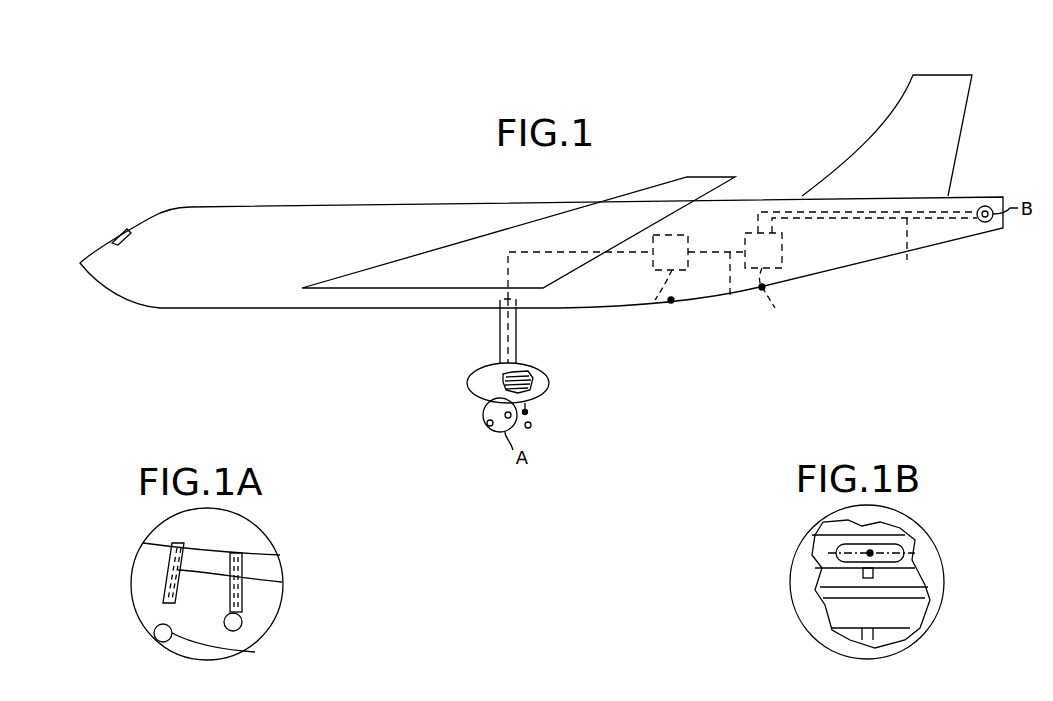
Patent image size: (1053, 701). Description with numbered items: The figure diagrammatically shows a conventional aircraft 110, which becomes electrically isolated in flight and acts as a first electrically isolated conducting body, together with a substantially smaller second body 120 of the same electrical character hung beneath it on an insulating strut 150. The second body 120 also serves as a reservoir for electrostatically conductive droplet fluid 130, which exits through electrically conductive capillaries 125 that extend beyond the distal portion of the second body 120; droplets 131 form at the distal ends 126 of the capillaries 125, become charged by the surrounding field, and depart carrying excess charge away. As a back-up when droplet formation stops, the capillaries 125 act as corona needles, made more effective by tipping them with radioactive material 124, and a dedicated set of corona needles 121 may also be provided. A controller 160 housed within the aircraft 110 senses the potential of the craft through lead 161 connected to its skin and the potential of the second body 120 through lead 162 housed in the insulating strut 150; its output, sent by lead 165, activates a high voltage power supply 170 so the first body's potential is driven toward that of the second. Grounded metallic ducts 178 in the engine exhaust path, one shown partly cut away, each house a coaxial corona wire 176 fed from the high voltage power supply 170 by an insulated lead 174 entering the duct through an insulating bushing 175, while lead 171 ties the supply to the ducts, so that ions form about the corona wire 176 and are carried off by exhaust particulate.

In FIG. 1, the aircraft 110 is at (282, 198).
In FIG. 1, the second body 120 is at (470, 378).
In FIG. 1, the corona needles 121 is at (479, 406).
In FIG. 1A, the radioactive material 124 is at (165, 603).
In FIG. 1, the capillaries 125 is at (528, 412).
In FIG. 1A, the capillaries 125 is at (268, 580).
In FIG. 1A, the distal ends 126 is at (246, 612).
In FIG. 1, the droplet fluid 130 is at (545, 377).
In FIG. 1, the droplets 131 is at (531, 428).
In FIG. 1A, the droplets 131 is at (241, 628).
In FIG. 1, the insulating strut 150 is at (500, 325).
In FIG. 1, the controller 160 is at (699, 263).
In FIG. 1, the lead 161 is at (655, 300).
In FIG. 1, the lead 162 is at (516, 334).
In FIG. 1, the lead 165 is at (725, 288).
In FIG. 1, the high voltage power supply 170 is at (782, 252).
In FIG. 1, the lead 171 is at (777, 297).
In FIG. 1, the insulated lead 174 is at (875, 244).
In FIG. 1B, the insulated lead 174 is at (835, 583).
In FIG. 1B, the insulating bushing 175 is at (855, 575).
In FIG. 1B, the corona wire 176 is at (850, 550).
In FIG. 1B, the metallic ducts 178 is at (910, 560).